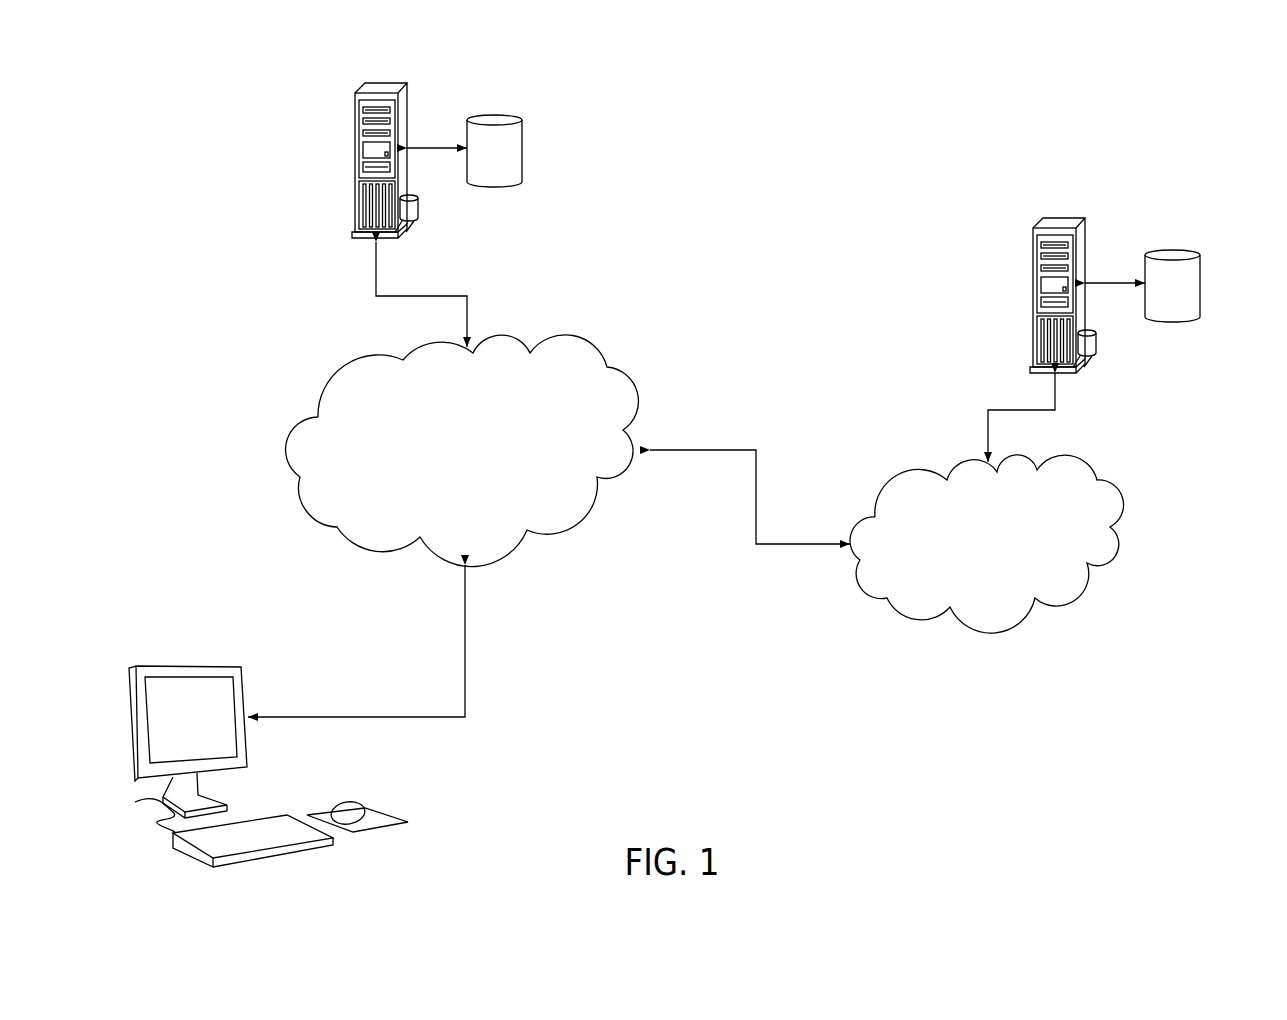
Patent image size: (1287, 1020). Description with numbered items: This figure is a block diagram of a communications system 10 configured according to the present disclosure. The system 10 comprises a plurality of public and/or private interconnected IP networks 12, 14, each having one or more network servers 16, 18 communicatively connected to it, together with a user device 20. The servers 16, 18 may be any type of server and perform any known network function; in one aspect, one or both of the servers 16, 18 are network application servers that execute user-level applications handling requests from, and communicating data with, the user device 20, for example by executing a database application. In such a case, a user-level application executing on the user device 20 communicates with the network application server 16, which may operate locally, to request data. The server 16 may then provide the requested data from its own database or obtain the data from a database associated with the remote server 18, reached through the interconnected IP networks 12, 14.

The communications system 10 is at (1213, 155).
The IP network 12 is at (567, 333).
The IP network 14 is at (1070, 452).
The network server 16 is at (383, 80).
The remote server 18 is at (1061, 213).
The user device 20 is at (190, 663).